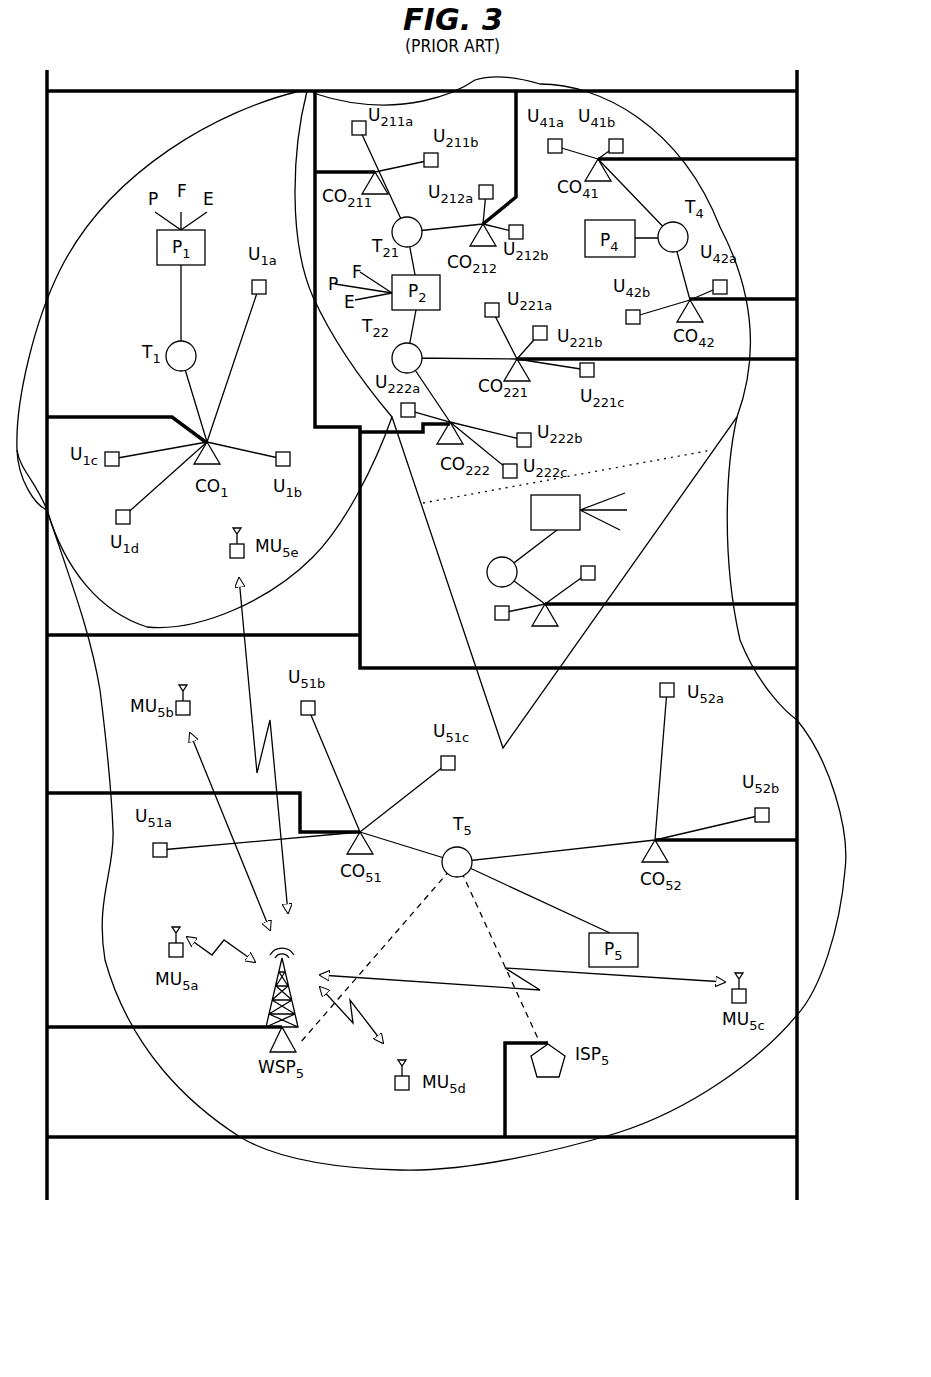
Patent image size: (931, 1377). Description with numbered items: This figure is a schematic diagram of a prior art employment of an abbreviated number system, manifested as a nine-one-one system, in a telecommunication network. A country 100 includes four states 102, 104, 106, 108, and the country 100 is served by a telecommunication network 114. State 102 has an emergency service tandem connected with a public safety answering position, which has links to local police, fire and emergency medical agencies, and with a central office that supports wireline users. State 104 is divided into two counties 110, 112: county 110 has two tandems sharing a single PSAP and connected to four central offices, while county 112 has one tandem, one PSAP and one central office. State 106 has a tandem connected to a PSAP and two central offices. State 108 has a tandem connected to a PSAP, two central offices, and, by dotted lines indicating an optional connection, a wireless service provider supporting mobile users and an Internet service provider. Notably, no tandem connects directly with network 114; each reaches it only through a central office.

The country 100 is at (553, 1155).
The state 102 is at (205, 143).
The state 104 is at (492, 101).
The state 106 is at (667, 157).
The state 108 is at (783, 726).
The county 110 is at (690, 429).
The county 112 is at (513, 529).
The telecommunication network 114 is at (720, 1137).